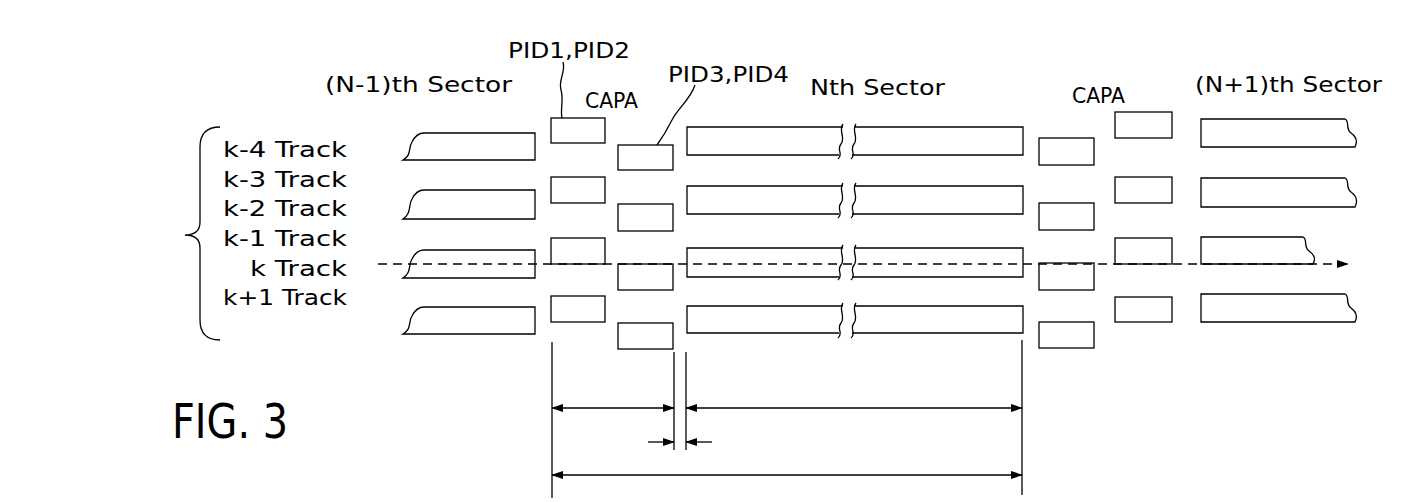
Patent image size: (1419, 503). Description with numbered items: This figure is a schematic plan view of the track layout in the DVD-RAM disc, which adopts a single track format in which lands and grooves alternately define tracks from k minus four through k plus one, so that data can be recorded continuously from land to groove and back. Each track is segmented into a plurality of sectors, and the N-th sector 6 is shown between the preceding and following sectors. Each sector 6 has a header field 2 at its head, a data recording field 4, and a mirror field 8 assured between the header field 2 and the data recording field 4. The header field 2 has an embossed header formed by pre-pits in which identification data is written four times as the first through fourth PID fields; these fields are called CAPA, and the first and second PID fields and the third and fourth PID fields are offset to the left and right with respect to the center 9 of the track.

The header field 2 is at (618, 410).
The data recording field 4 is at (852, 407).
The sector 6 is at (911, 474).
The mirror field 8 is at (683, 423).
The center of the track 9 is at (392, 268).